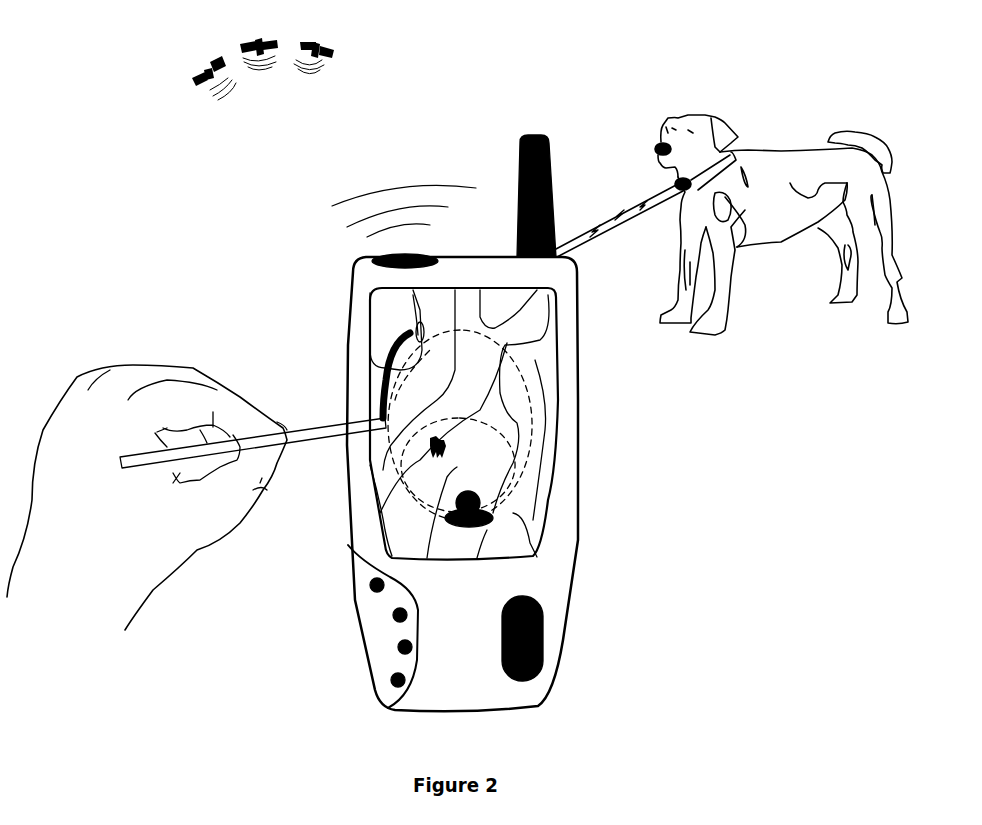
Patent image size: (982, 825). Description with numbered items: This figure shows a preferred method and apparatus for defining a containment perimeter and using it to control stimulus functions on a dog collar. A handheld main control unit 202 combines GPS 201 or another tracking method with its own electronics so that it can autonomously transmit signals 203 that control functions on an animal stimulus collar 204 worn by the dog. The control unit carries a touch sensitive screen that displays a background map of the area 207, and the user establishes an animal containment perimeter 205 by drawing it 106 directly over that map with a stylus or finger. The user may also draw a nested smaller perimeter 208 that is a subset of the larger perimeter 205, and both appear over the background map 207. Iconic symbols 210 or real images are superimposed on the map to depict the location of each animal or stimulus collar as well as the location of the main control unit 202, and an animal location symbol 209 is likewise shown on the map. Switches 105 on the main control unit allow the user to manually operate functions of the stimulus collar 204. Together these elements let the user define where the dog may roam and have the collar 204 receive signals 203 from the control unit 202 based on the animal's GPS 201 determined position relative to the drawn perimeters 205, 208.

The switches 105 is at (445, 484).
The drawing of the perimeter 106 is at (383, 418).
The GPS 201 is at (402, 254).
The main control unit 202 is at (493, 254).
The signals 203 is at (625, 204).
The animal stimulus collar 204 is at (672, 181).
The animal containment perimeter 205 is at (420, 338).
The background map of the area 207 is at (503, 400).
The nested smaller perimeter 208 is at (517, 471).
The animal position icon 209 is at (452, 455).
The iconic symbol 210 is at (488, 527).